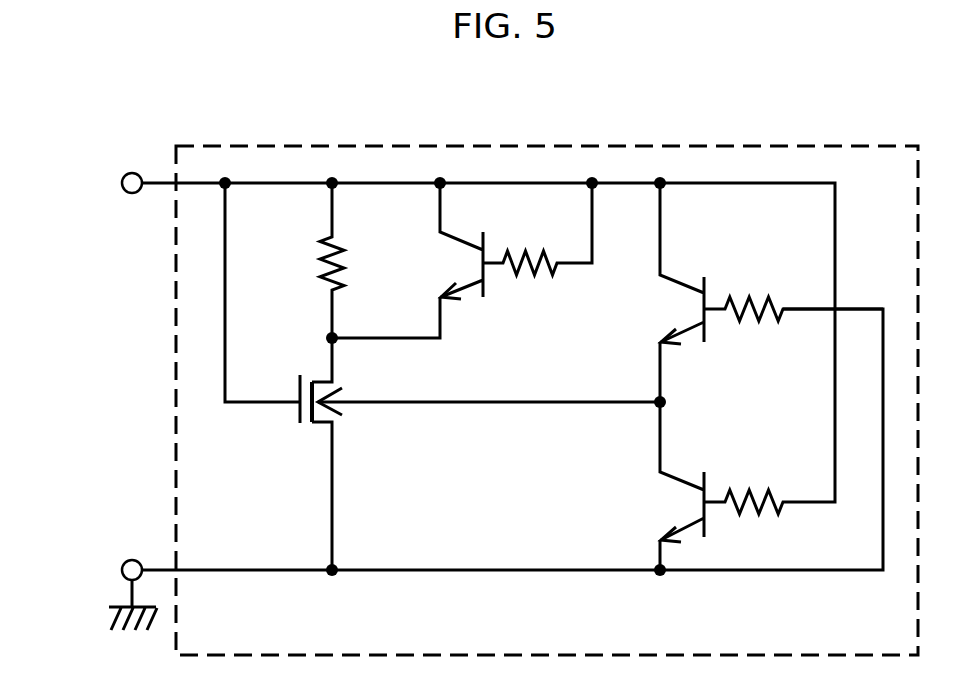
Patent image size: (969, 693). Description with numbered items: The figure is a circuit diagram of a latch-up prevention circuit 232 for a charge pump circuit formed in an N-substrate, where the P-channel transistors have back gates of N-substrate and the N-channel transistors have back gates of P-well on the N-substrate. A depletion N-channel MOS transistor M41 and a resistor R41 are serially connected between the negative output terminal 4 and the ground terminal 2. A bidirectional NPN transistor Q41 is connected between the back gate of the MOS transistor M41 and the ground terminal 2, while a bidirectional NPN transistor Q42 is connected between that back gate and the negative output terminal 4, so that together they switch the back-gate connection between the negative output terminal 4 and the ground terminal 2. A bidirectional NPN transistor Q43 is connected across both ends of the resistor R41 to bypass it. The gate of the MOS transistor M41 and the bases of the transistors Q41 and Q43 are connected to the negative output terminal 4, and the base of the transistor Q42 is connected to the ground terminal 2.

The latch-up prevention circuit 232 is at (539, 146).
The negative output terminal 4 is at (127, 194).
The ground terminal 2 is at (127, 559).
The resistor R41 is at (308, 260).
The bidirectional NPN transistor Q43 is at (462, 260).
The bidirectional NPN transistor Q42 is at (761, 292).
The bidirectional NPN transistor Q41 is at (740, 439).
The depletion N-channel MOS transistor M41 is at (304, 454).